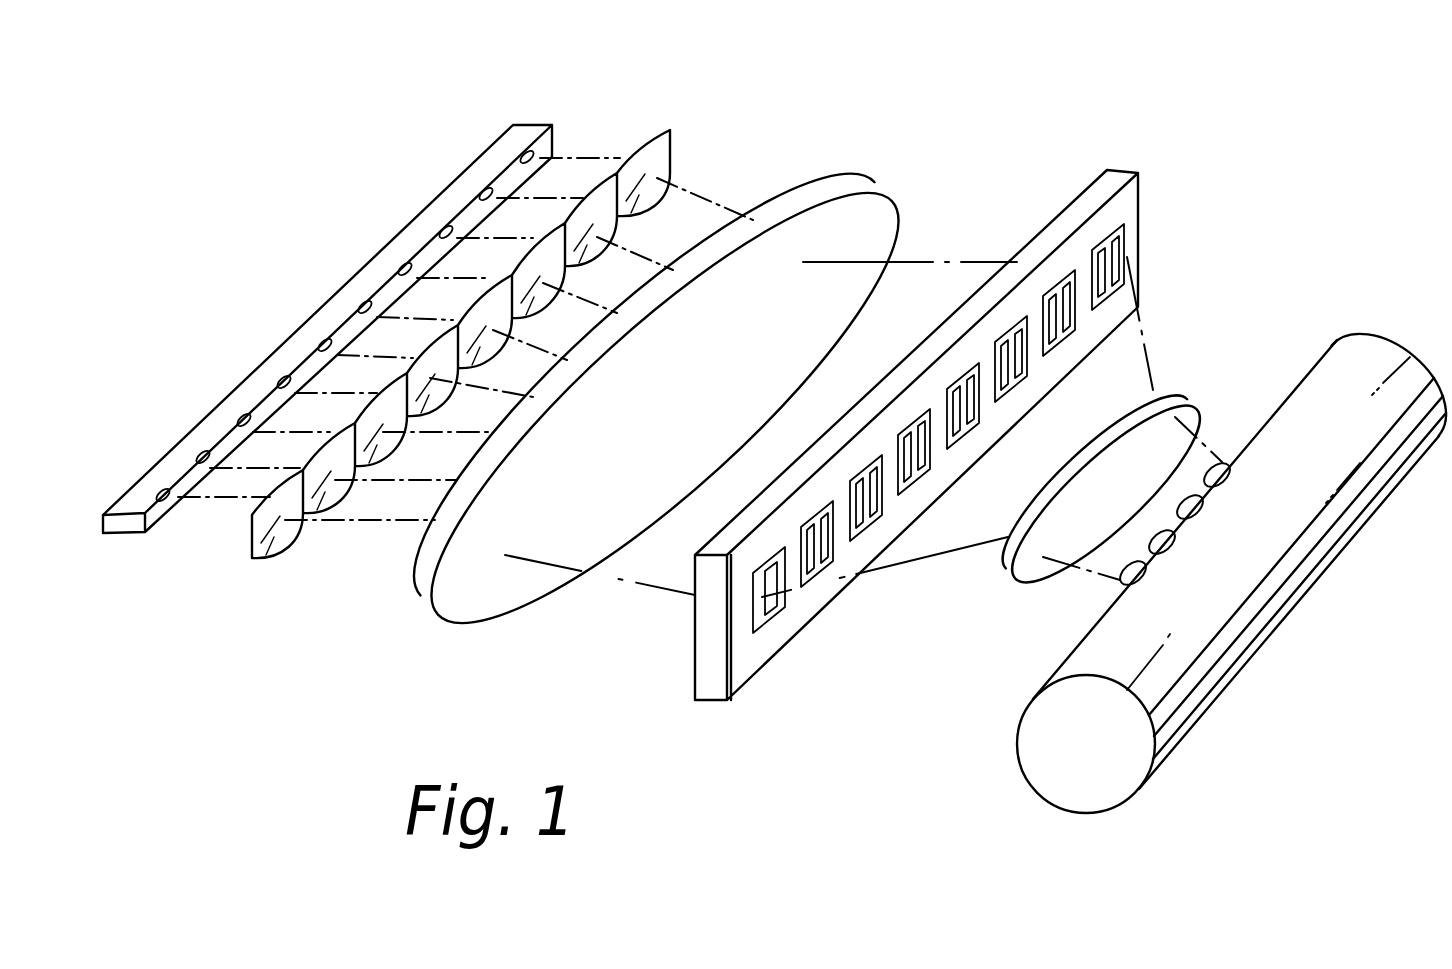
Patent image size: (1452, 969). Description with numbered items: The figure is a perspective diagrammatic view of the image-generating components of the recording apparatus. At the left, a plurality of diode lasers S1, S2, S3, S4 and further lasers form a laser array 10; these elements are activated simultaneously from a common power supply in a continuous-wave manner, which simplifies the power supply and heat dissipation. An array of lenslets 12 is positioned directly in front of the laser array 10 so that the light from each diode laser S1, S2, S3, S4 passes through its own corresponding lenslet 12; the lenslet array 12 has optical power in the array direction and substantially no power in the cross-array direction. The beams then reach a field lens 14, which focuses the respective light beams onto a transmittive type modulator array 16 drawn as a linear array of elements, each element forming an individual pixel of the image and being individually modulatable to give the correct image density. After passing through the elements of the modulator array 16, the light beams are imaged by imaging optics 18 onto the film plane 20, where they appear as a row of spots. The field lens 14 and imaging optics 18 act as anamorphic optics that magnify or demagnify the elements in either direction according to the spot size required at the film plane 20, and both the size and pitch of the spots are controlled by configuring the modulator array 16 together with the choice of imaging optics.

The laser array 10 is at (479, 118).
The array of lenslets 12 is at (707, 108).
The field lens 14 is at (866, 207).
The modulator array 16 is at (1132, 200).
The imaging optics 18 is at (1192, 396).
The film plane 20 is at (1238, 418).
The diode laser S1 is at (190, 526).
The diode laser S2 is at (220, 486).
The diode laser S3 is at (265, 452).
The diode laser S4 is at (306, 412).